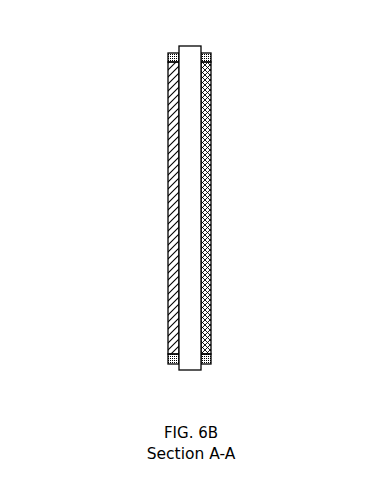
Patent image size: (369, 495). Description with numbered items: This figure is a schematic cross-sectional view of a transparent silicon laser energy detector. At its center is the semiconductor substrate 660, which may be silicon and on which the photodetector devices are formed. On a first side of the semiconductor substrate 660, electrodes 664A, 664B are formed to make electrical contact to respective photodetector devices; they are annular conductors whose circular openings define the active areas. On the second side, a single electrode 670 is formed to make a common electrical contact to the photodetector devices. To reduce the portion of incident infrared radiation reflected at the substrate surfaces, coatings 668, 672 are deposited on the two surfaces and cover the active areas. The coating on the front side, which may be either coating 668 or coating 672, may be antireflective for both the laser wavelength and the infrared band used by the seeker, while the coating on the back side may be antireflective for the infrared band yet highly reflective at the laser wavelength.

The semiconductor substrate 660 is at (190, 46).
The electrode 664A is at (169, 53).
The electrode 664B is at (168, 357).
The coating 668 is at (168, 200).
The single electrode 670 is at (212, 55).
The coating 672 is at (211, 210).